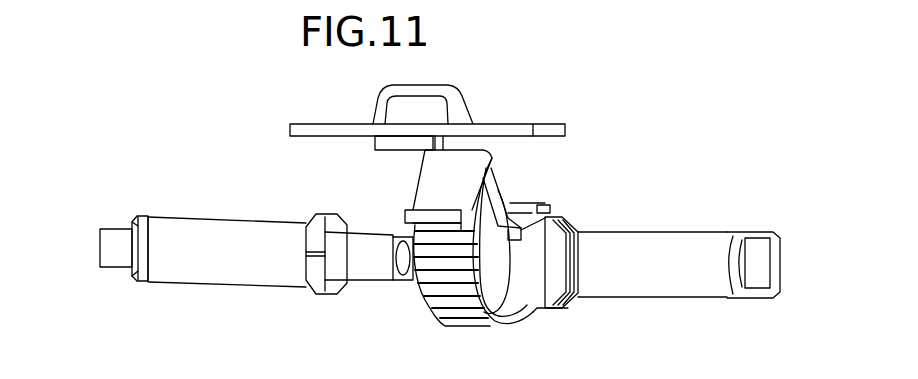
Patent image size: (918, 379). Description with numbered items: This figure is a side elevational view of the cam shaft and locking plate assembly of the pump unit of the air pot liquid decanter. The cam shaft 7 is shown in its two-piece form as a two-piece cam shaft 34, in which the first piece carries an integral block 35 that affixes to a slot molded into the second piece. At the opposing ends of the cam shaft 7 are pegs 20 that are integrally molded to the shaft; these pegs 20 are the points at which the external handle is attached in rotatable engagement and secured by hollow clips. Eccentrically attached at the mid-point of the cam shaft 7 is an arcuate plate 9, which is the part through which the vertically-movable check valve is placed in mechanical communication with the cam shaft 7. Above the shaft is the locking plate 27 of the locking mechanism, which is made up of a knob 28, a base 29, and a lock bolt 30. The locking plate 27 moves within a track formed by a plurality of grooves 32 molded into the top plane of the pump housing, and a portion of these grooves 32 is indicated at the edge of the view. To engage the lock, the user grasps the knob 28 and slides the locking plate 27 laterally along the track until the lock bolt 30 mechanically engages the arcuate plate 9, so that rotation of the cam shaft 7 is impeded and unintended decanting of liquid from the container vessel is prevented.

The cam shaft 7 is at (253, 220).
The arcuate plate 9 is at (498, 180).
The pegs 20 is at (100, 241).
The locking plate 27 is at (315, 124).
The knob 28 is at (470, 103).
The base 29 is at (548, 124).
The lock bolt 30 is at (404, 153).
The grooves 32 is at (698, 8).
The two-piece cam shaft 34 is at (697, 221).
The integral block 35 is at (352, 283).